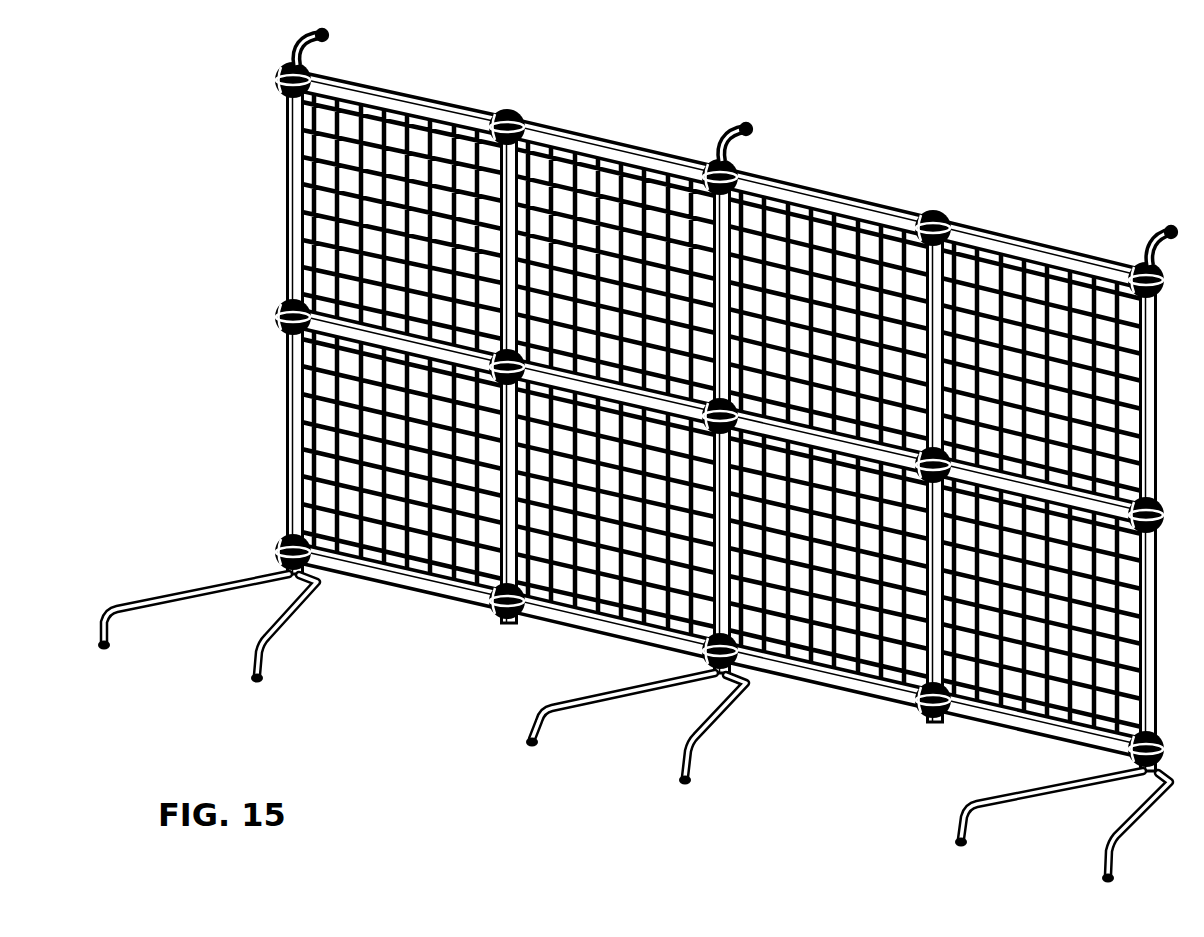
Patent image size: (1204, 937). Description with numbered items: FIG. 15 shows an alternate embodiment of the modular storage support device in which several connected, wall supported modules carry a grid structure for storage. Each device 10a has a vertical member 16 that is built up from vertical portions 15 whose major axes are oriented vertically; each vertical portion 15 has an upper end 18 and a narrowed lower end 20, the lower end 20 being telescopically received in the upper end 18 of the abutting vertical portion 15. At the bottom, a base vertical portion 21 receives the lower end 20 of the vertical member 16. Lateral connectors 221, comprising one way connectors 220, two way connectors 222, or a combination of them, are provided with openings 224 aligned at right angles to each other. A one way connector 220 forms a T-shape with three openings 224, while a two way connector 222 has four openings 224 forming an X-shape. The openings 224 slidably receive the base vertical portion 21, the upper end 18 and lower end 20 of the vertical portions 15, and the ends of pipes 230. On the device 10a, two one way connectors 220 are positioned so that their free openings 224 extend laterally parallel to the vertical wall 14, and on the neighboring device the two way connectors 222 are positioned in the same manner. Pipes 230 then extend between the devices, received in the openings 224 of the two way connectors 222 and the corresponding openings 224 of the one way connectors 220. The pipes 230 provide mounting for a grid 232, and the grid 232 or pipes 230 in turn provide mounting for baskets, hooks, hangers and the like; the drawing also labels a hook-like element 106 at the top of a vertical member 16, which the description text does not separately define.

The vertical wall 14 is at (935, 114).
The grid 232 is at (820, 246).
The vertical member 16 is at (708, 562).
The pipes 230 is at (590, 148).
The vertical portion 15 is at (286, 440).
The device 10a is at (290, 182).
The upper end 18 is at (289, 366).
The openings 224 is at (318, 78).
The one way connector 220 is at (280, 314).
The lateral connectors 221 is at (524, 110).
The two way connector 222 is at (935, 452).
The lower end 20 is at (283, 543).
The base vertical portion 21 is at (276, 571).
The hook 106 is at (735, 124).